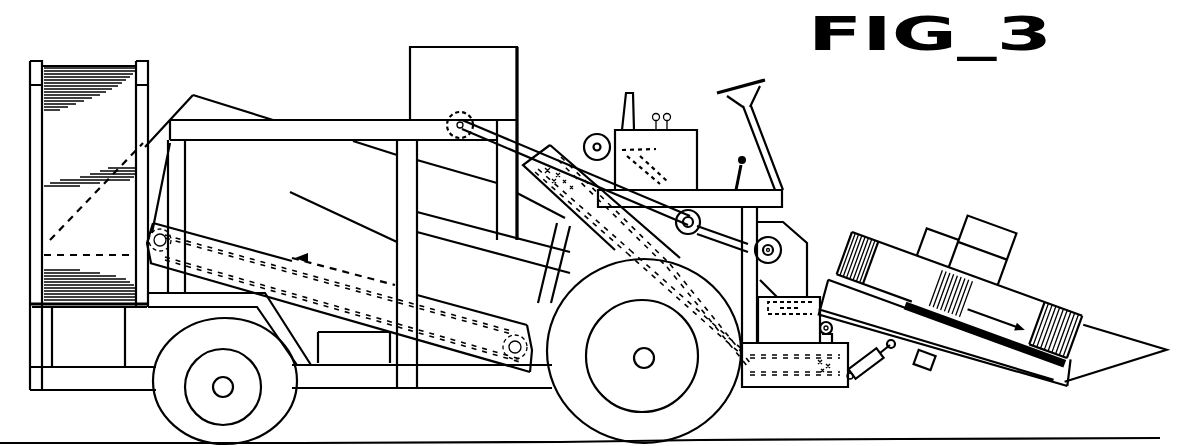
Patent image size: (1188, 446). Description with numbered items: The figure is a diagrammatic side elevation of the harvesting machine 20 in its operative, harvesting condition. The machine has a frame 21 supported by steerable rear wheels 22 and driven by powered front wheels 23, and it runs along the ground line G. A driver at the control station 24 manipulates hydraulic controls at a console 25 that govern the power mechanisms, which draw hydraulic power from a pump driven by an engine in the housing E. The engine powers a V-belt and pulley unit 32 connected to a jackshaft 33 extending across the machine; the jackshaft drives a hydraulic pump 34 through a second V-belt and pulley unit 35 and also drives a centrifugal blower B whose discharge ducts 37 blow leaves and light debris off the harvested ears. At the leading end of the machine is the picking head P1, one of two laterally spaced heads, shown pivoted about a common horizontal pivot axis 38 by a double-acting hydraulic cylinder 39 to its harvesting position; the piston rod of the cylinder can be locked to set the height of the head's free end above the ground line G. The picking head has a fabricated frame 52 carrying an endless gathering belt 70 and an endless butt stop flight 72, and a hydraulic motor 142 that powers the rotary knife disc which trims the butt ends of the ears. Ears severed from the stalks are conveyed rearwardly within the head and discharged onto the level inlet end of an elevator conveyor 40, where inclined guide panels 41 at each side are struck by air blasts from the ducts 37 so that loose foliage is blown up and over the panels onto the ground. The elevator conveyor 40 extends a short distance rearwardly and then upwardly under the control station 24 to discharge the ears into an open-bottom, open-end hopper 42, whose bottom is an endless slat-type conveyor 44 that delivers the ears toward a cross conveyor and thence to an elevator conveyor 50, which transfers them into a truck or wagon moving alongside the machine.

The harvesting machine 20 is at (845, 97).
The frame 21 is at (336, 390).
The steerable rear wheels 22 is at (152, 398).
The powered front wheels 23 is at (626, 336).
The control station 24 is at (678, 110).
The console 25 is at (690, 138).
The V-belt and pulley unit 32 is at (520, 136).
The jackshaft 33 is at (687, 234).
The hydraulic pump 34 is at (597, 134).
The V-belt and pulley unit 35 is at (640, 159).
The discharge ducts 37 is at (791, 300).
The horizontal pivot axis 38 is at (818, 328).
The double-acting hydraulic cylinder 39 is at (872, 374).
The elevator conveyor 40 is at (636, 273).
The inclined guide panels 41 is at (797, 346).
The hopper 42 is at (323, 192).
The endless slat-type conveyor 44 is at (210, 236).
The elevator conveyor 50 is at (66, 139).
The fabricated frame 52 is at (1032, 392).
The gathering belt 70 is at (1064, 300).
The butt stop flight 72 is at (1077, 348).
The hydraulic motor 142 is at (934, 372).
The housing E is at (440, 84).
The centrifugal blower B is at (792, 232).
The picking head P1 is at (1022, 278).
The ground line G is at (1094, 438).